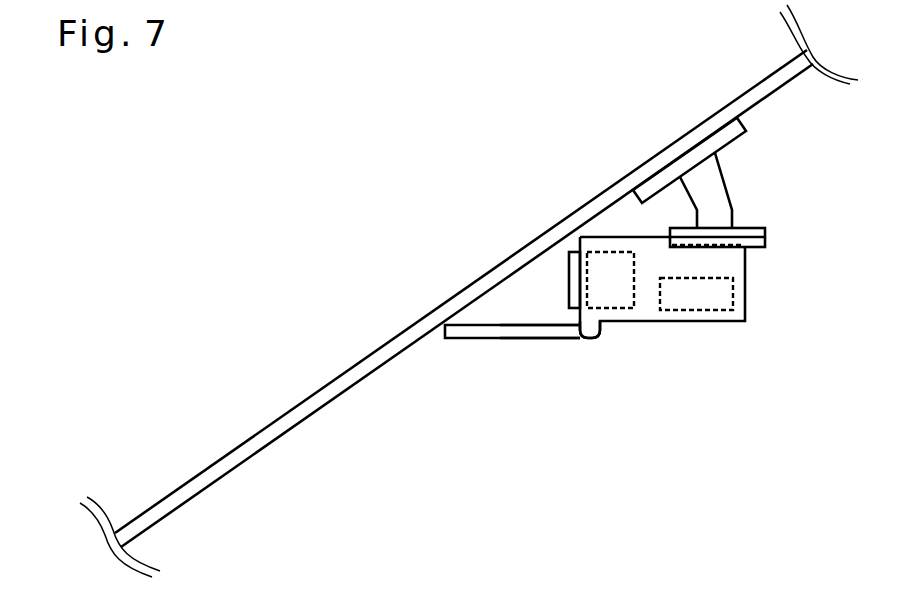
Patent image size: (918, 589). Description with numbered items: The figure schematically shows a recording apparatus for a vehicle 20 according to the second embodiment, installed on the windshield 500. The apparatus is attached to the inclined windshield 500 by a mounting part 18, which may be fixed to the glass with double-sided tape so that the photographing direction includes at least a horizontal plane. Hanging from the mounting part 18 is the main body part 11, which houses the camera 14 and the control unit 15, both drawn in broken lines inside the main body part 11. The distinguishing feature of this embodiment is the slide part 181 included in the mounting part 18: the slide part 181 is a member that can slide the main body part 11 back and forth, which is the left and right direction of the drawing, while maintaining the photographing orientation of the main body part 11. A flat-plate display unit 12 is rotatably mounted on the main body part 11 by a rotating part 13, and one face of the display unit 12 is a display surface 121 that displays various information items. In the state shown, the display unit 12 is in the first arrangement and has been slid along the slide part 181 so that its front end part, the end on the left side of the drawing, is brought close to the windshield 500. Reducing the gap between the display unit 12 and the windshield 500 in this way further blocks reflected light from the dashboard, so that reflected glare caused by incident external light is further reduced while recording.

The windshield 500 is at (208, 467).
The recording apparatus for a vehicle 20 is at (633, 279).
The mounting part 18 is at (725, 190).
The slide part 181 is at (753, 228).
The main body part 11 is at (748, 253).
The camera 14 is at (568, 298).
The control unit 15 is at (733, 295).
The display unit 12 is at (470, 338).
The display surface 121 is at (530, 338).
The rotating part 13 is at (592, 330).